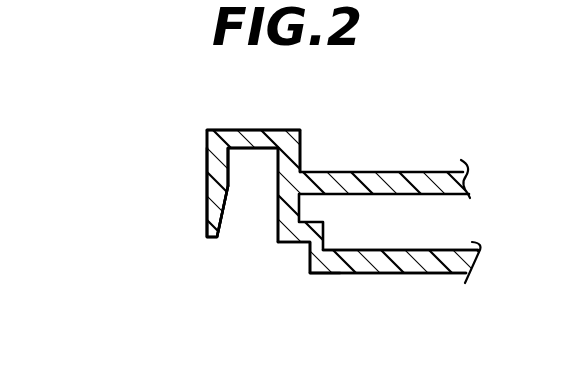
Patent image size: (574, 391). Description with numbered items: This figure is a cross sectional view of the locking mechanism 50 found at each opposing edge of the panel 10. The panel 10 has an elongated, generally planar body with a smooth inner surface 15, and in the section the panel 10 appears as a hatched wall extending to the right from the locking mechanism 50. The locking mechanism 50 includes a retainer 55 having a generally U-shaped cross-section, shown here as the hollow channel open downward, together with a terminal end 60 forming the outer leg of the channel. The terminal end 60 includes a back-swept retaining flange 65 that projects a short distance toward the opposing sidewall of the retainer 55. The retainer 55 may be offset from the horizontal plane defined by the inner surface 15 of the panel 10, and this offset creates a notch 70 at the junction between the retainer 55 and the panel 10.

The panel 10 is at (331, 140).
The inner surface 15 is at (342, 272).
The locking mechanism 50 is at (178, 176).
The retainer 55 is at (247, 130).
The terminal end 60 is at (211, 237).
The retaining flange 65 is at (240, 188).
The notch 70 is at (293, 255).